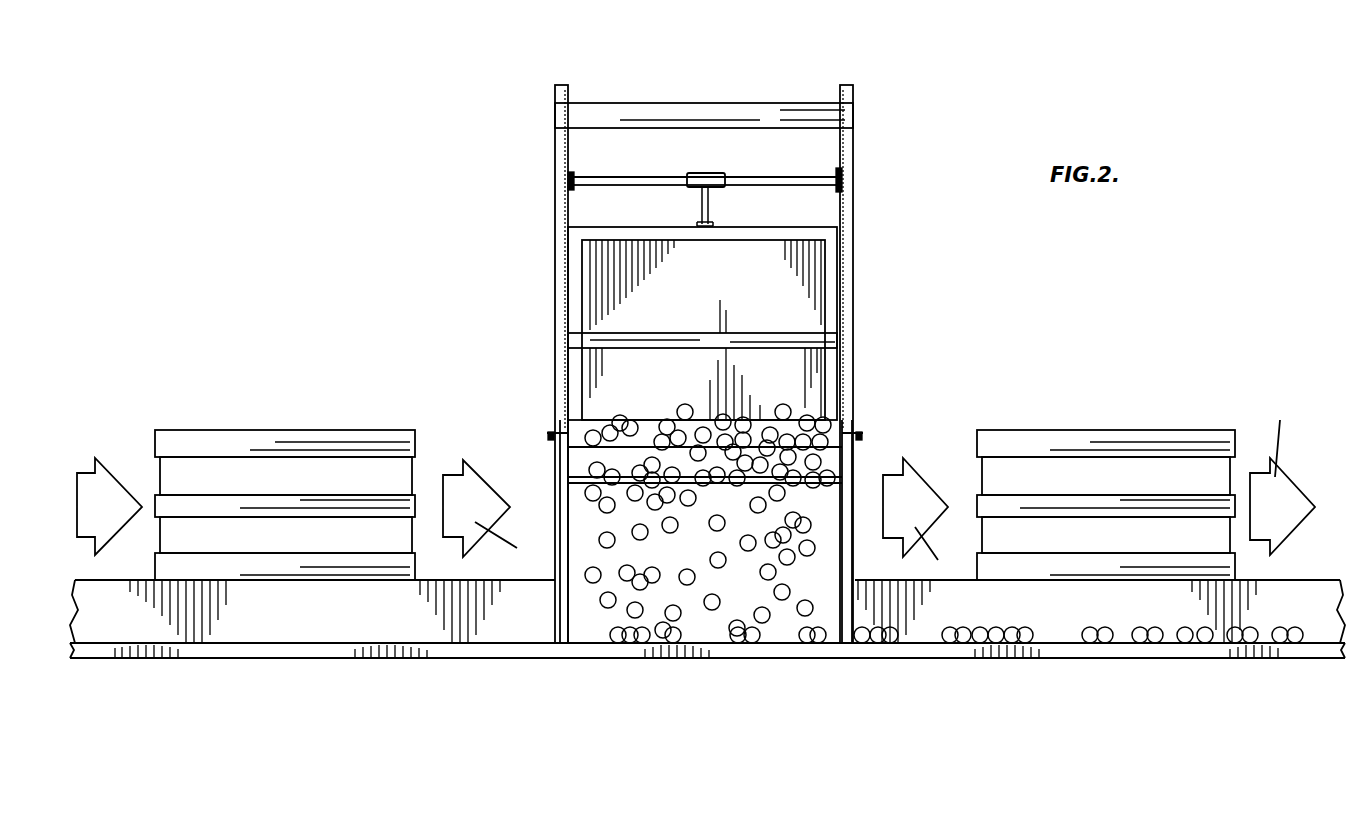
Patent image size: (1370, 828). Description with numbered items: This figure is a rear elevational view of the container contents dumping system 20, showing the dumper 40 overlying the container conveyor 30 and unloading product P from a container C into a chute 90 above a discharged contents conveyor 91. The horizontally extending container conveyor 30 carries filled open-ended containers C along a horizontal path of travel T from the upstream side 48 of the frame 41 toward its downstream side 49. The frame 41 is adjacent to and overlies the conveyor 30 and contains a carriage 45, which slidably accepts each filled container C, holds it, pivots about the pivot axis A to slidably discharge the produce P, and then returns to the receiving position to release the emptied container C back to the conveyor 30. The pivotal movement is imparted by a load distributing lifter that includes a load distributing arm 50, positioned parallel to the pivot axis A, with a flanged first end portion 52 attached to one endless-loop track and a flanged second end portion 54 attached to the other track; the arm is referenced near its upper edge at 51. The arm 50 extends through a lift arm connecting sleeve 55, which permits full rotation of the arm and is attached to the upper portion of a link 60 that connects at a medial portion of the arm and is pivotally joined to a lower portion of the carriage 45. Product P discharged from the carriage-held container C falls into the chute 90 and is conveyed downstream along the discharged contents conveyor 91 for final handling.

The container contents dumping system 20 is at (913, 682).
The container conveyor 30 is at (347, 628).
The dumper 40 is at (532, 140).
The frame 41 is at (657, 112).
The carriage 45 is at (847, 163).
The upstream side 48 is at (505, 323).
The downstream side 49 is at (862, 327).
The load distributing arm 50 is at (808, 177).
The cross bar upper surface 51 is at (588, 177).
The first end portion 52 is at (560, 182).
The second end portion 54 is at (853, 182).
The lift arm connecting sleeve 55 is at (685, 186).
The link 60 is at (710, 198).
The chute 90 is at (888, 564).
The discharged contents conveyor 91 is at (1305, 653).
The open-ended container C is at (302, 438).
The pivot axis A is at (550, 437).
The path of travel T is at (879, 488).
The product P is at (765, 620).